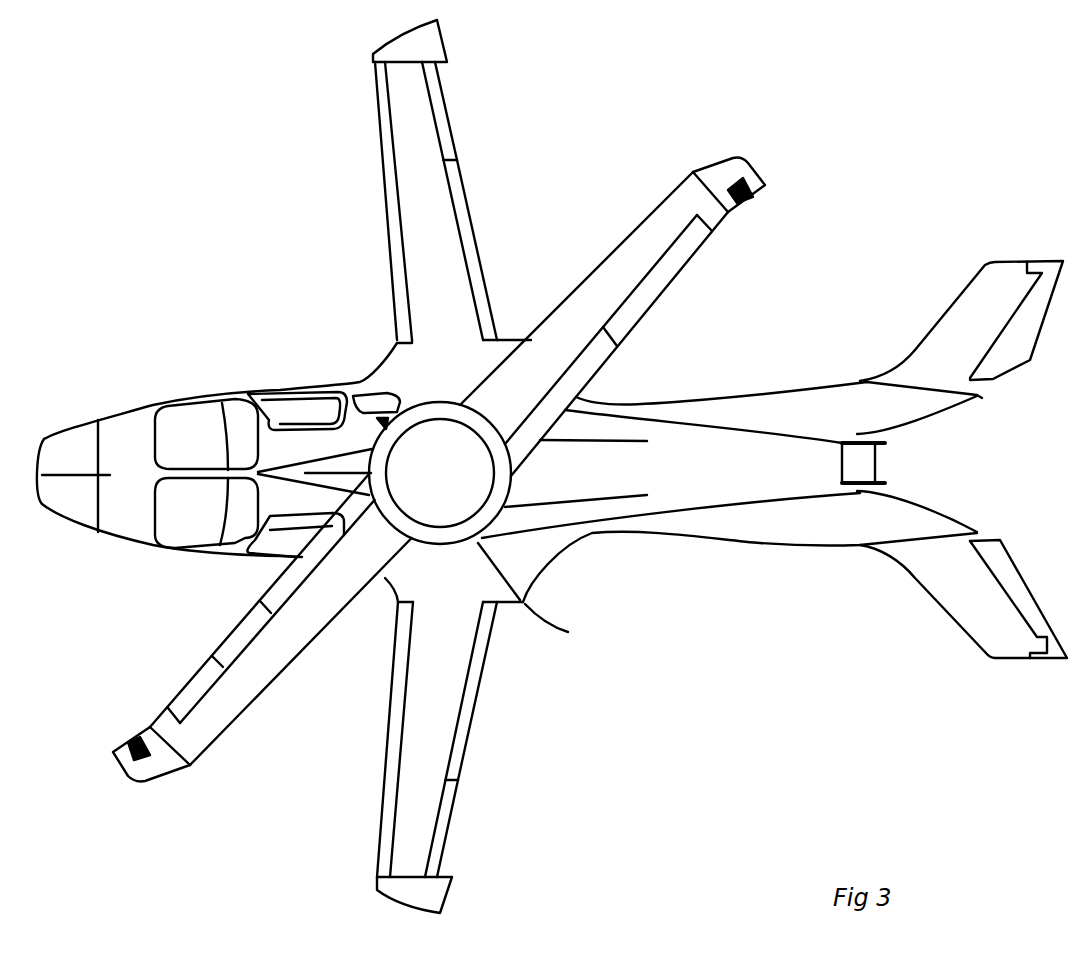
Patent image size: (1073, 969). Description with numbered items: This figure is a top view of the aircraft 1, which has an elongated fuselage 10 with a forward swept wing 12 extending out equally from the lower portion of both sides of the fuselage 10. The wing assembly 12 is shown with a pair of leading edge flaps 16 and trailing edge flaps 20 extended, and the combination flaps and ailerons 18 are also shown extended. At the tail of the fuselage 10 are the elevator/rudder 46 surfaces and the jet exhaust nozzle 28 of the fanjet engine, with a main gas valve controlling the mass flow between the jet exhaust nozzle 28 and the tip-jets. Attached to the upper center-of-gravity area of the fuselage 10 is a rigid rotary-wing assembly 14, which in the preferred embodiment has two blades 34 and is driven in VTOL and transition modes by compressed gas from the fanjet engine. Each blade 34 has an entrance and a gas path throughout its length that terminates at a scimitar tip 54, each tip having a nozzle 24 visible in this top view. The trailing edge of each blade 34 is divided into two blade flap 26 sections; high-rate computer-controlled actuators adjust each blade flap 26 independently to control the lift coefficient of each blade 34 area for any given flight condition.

The aircraft 1 is at (199, 176).
The fuselage 10 is at (130, 432).
The forward swept wing 12 is at (408, 230).
The rigid rotary-wing assembly 14 is at (460, 493).
The leading edge flaps 16 is at (390, 165).
The combination flaps and ailerons 18 is at (440, 113).
The trailing edge flaps 20 is at (467, 198).
The nozzle 24 is at (760, 198).
The blade flap 26 is at (650, 300).
The jet exhaust nozzle 28 is at (870, 461).
The blades 34 is at (660, 215).
The elevator/rudder 46 is at (1013, 350).
The scimitar tips 54 is at (733, 158).